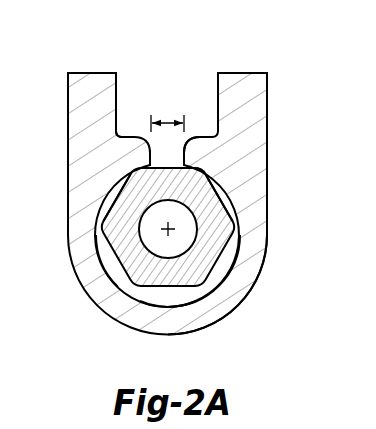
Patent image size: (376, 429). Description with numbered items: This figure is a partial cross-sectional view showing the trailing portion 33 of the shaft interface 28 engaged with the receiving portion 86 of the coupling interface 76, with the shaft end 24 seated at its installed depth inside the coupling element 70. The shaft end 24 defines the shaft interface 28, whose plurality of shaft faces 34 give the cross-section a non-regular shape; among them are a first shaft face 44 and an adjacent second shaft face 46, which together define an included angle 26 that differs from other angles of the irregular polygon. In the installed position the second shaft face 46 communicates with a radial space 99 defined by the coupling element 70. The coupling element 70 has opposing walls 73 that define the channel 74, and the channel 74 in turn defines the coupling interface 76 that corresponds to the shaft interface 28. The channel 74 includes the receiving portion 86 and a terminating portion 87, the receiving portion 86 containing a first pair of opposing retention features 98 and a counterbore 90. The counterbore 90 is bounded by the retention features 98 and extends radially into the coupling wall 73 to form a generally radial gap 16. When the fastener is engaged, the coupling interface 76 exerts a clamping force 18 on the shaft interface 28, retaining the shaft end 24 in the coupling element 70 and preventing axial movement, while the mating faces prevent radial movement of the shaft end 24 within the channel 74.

The coupling element 70 is at (53, 68).
The channel 74 is at (201, 95).
The first pair of opposing retention features 98 is at (128, 137).
The second shaft face 46 is at (158, 166).
The shaft faces 34 is at (126, 265).
The radial space 99 is at (167, 121).
The opposing walls 73 is at (230, 291).
The shaft interface 28 is at (246, 271).
The trailing portion 33 is at (229, 272).
The receiving portion 86 is at (133, 183).
The counterbore 90 is at (186, 291).
The coupling interface 76 is at (84, 289).
The terminating portion 87 is at (128, 262).
The radial gap 16 is at (196, 289).
The first shaft face 44 is at (175, 170).
The shaft end 24 is at (103, 202).
The included angle 26 is at (195, 168).
The clamping force 18 is at (46, 149).